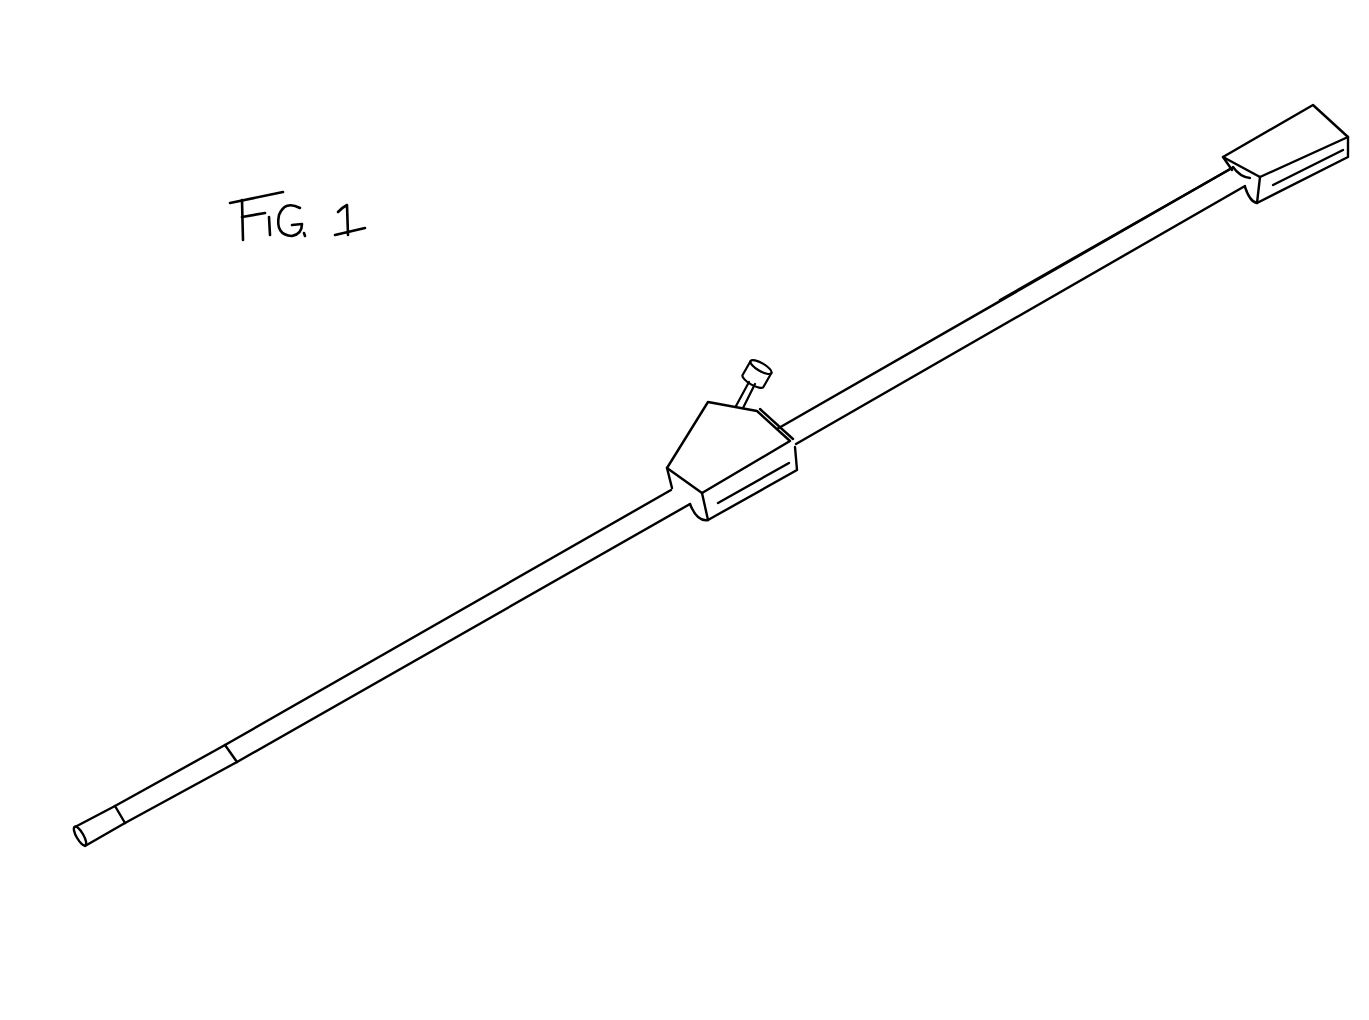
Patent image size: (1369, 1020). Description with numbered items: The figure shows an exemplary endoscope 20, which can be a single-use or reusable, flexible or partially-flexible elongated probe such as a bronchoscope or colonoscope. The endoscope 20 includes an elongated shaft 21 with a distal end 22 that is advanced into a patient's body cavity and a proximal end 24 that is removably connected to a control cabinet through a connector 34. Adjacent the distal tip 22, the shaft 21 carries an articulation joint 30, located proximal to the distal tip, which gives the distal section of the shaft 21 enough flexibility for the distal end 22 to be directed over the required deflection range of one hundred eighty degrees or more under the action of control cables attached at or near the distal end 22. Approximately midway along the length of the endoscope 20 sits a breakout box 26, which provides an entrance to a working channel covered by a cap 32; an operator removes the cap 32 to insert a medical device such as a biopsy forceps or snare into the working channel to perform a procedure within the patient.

The endoscope 20 is at (897, 224).
The elongated shaft 21 is at (570, 573).
The distal end 22 is at (110, 838).
The proximal end 24 is at (1192, 217).
The breakout box 26 is at (728, 507).
The articulation joint 30 is at (205, 793).
The cap 32 is at (757, 359).
The connector 34 is at (1297, 113).